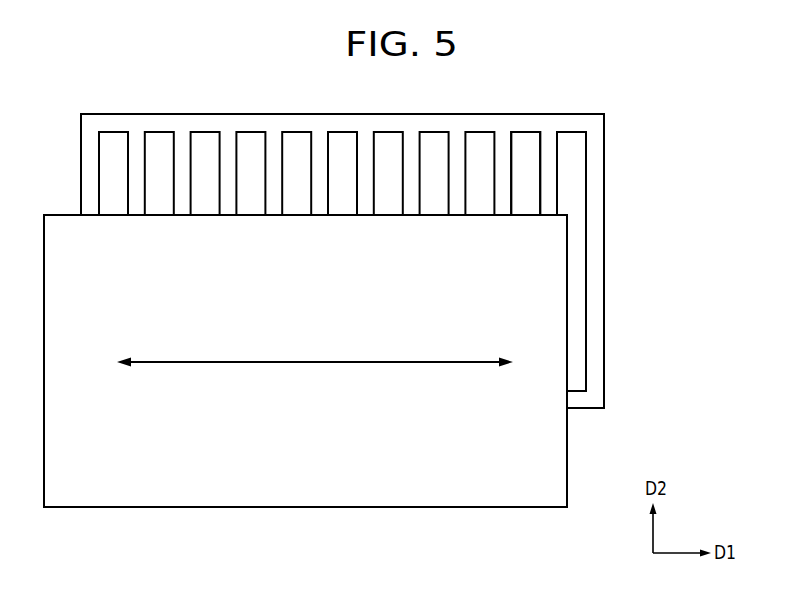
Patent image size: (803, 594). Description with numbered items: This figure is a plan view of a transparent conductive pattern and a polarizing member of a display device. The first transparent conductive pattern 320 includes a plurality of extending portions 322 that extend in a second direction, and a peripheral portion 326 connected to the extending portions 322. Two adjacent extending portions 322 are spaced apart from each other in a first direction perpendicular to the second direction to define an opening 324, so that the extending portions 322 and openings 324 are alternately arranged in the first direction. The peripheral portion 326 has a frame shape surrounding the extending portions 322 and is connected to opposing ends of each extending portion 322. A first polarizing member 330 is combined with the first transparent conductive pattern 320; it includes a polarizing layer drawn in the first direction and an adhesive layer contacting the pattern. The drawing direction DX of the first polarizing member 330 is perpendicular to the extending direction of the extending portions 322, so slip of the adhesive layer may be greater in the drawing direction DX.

The first transparent conductive pattern 320 is at (395, 261).
The extending portion 322 is at (548, 181).
The opening 324 is at (525, 147).
The peripheral portion 326 is at (594, 214).
The first polarizing member 330 is at (560, 447).
The drawing direction DX is at (313, 364).